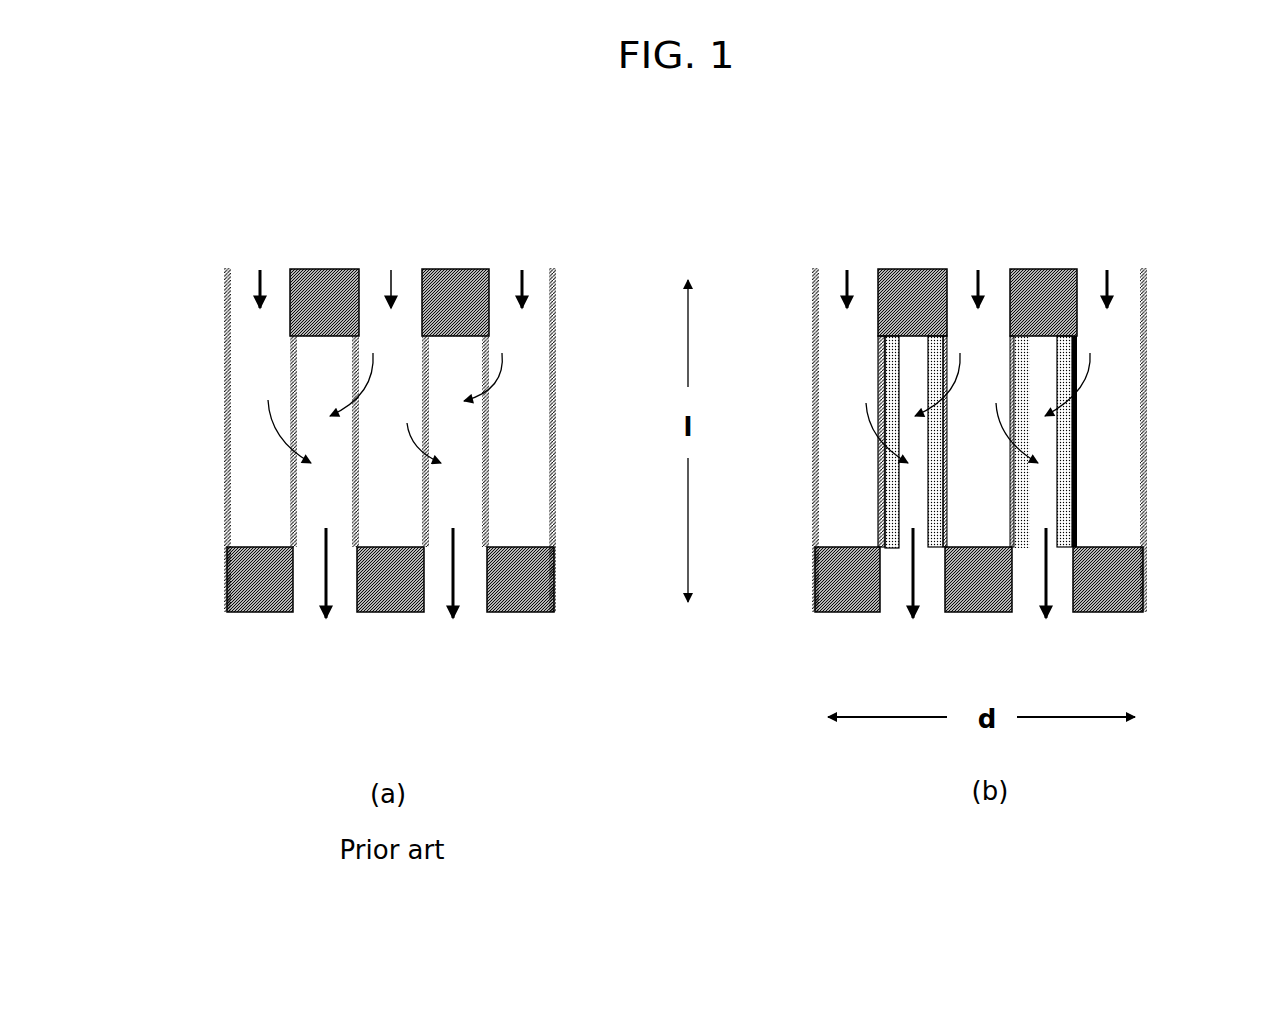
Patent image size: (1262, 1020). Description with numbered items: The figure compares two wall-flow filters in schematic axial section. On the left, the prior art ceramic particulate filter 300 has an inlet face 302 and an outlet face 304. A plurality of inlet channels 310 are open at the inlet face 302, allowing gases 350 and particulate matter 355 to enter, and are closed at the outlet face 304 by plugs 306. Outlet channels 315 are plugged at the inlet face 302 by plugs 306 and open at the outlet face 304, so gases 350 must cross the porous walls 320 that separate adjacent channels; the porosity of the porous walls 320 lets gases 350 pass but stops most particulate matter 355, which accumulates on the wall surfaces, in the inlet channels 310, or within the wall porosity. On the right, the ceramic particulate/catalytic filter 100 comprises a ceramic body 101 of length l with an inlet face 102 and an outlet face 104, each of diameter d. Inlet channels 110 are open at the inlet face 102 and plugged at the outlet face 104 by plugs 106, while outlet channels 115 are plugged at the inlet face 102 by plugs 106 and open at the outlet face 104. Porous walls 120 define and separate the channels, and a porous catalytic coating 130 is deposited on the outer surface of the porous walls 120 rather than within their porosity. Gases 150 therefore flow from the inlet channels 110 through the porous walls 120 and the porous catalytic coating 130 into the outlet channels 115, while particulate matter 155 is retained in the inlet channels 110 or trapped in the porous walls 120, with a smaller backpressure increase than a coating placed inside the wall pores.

The prior art ceramic particulate filter 300 is at (408, 136).
The plugs 306 is at (432, 258).
The inlet face 302 is at (455, 270).
The outlet face 304 is at (468, 618).
The inlet channels 310 is at (242, 348).
The porous walls 320 is at (286, 377).
The outlet channels 315 is at (325, 508).
The gases 350 is at (407, 433).
The particulate matter 355 is at (523, 275).
The ceramic particulate/catalytic filter 100 is at (992, 136).
The ceramic body 101 is at (798, 286).
The plugs 106 is at (1020, 258).
The inlet face 102 is at (1043, 269).
The outlet face 104 is at (1054, 612).
The inlet channels 110 is at (822, 335).
The porous walls 120 is at (868, 366).
The porous catalytic coating 130 is at (888, 508).
The outlet channels 115 is at (901, 496).
The gases 150 is at (999, 433).
The particulate matter 155 is at (1110, 275).